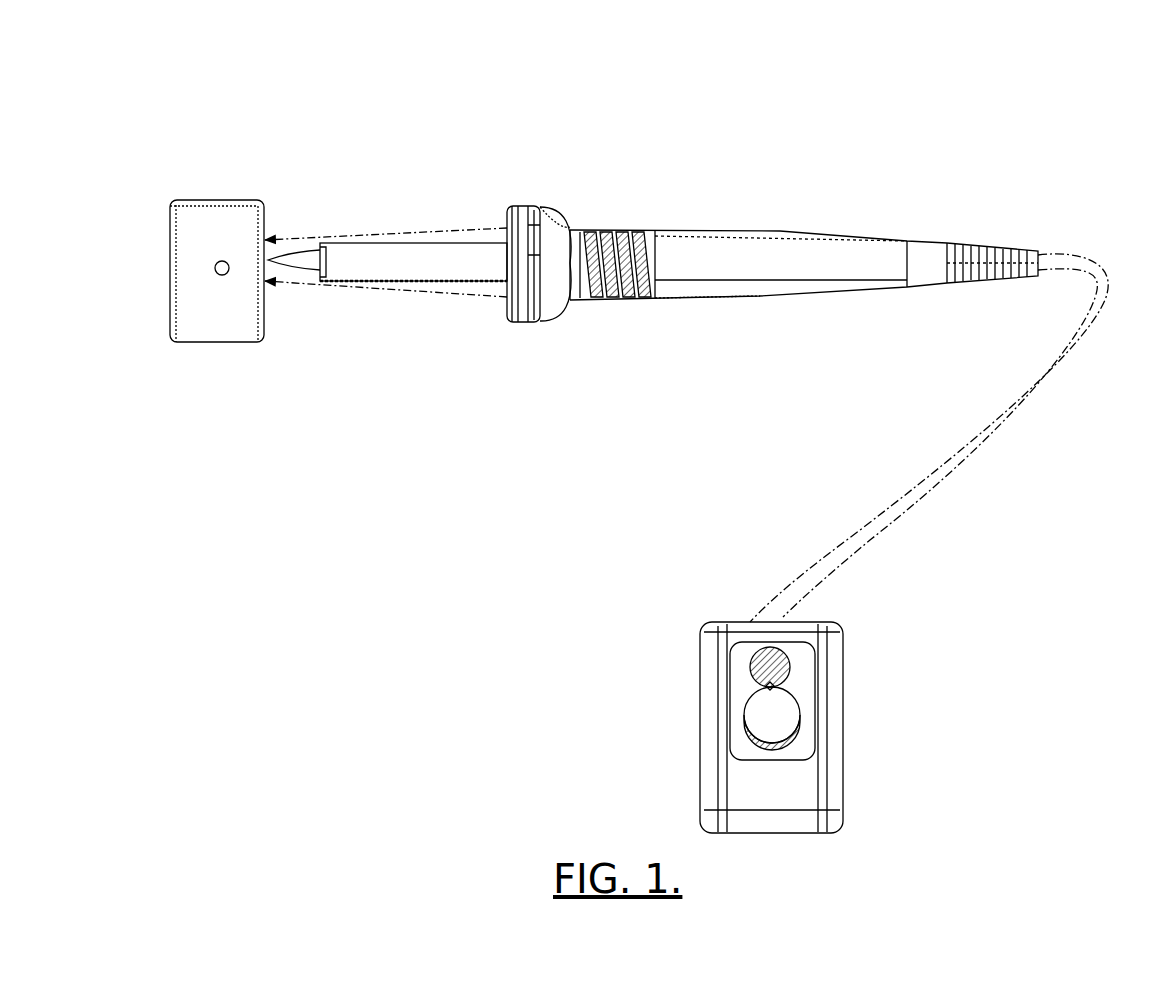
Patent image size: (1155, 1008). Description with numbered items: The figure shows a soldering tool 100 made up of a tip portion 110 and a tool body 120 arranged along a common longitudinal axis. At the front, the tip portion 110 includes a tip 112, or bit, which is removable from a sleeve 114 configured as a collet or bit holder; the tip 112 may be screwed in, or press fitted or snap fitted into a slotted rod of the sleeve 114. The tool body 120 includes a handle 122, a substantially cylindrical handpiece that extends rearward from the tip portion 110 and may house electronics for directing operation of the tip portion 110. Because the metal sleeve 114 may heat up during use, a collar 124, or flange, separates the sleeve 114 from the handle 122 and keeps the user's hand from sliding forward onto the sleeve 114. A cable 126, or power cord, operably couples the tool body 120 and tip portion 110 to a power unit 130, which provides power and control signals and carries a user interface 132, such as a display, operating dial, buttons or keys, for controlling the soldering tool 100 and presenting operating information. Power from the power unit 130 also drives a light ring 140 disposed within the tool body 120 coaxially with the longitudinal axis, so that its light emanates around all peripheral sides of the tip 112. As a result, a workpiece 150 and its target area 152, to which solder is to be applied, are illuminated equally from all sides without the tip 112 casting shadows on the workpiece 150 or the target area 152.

The soldering tool 100 is at (358, 104).
The tip portion 110 is at (416, 280).
The tip 112 is at (320, 267).
The sleeve 114 is at (445, 245).
The tool body 120 is at (804, 309).
The handle 122 is at (715, 258).
The collar 124 is at (530, 240).
The cable 126 is at (970, 453).
The power unit 130 is at (811, 727).
The user interface 132 is at (748, 720).
The light ring 140 is at (533, 245).
The workpiece 150 is at (210, 272).
The target area 152 is at (222, 276).